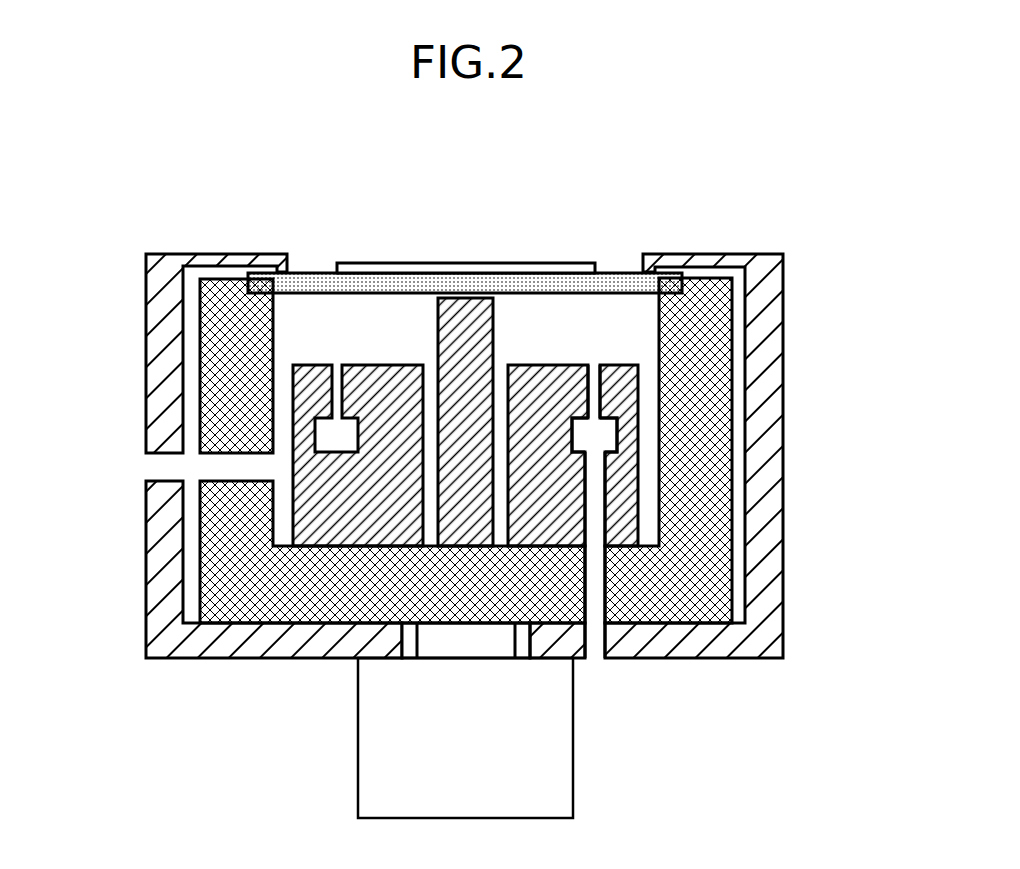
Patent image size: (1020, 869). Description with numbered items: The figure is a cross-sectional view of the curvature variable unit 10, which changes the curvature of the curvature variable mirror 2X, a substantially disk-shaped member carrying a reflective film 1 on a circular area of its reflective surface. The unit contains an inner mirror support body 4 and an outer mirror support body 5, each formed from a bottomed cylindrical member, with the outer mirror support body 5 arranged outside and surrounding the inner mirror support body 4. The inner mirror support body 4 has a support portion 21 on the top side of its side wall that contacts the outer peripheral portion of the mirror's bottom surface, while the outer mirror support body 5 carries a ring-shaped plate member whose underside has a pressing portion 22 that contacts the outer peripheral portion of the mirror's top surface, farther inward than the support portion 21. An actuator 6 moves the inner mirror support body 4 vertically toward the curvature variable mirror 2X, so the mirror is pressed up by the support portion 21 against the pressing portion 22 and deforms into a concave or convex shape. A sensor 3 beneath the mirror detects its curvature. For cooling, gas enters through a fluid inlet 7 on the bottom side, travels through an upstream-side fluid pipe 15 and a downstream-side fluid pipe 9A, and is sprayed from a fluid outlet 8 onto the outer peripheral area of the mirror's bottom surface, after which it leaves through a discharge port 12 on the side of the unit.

The curvature variable unit 10 is at (354, 184).
The outer mirror support body 5 is at (165, 273).
The pressing portion 22 is at (660, 263).
The discharge port 12 is at (163, 466).
The inner mirror support body 4 is at (222, 283).
The upstream-side fluid pipe 15 is at (593, 586).
The support portion 21 is at (670, 293).
The curvature variable mirror 2X is at (605, 282).
The reflective film 1 is at (437, 268).
The sensor 3 is at (472, 305).
The fluid outlet 8 is at (593, 367).
The downstream-side fluid pipe 9A is at (600, 398).
The fluid inlet 7 is at (595, 660).
The actuator 6 is at (375, 738).